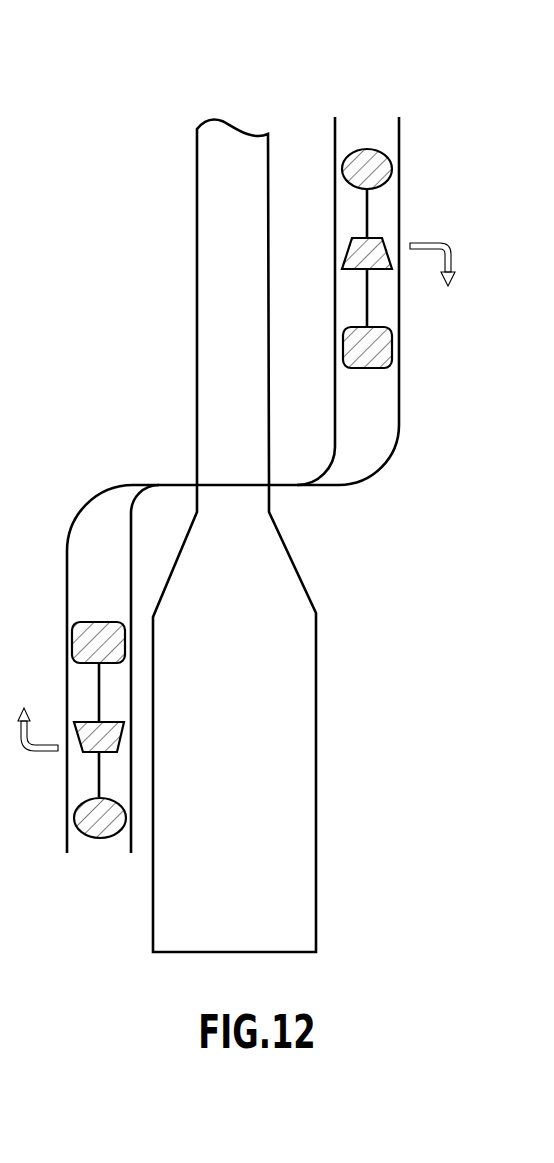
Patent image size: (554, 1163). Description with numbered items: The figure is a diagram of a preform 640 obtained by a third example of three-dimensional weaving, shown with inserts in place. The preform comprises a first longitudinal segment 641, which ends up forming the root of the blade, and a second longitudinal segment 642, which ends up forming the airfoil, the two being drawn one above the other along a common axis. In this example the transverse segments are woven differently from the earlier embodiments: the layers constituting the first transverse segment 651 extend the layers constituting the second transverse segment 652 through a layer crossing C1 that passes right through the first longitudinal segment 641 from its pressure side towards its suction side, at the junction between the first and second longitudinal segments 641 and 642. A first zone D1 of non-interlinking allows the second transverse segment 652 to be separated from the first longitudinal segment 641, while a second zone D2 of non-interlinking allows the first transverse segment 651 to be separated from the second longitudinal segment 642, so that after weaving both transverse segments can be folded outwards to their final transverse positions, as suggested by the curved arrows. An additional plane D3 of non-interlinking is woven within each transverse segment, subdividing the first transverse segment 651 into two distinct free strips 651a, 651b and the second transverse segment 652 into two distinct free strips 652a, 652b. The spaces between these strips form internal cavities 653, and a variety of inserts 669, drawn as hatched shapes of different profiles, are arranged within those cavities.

The preform 640 is at (167, 78).
The first longitudinal segment 641 is at (219, 854).
The second longitudinal segment 642 is at (248, 176).
The first transverse segment 651 is at (374, 267).
The free strip of first transverse segment 651a is at (400, 307).
The free strip of first transverse segment 651b is at (335, 282).
The second transverse segment 652 is at (107, 703).
The free strip of second transverse segment 652a is at (130, 682).
The free strip of second transverse segment 652b is at (67, 642).
The internal cavity 653 is at (383, 213).
The insert 669 is at (380, 170).
The first zone of non-interlinking D1 is at (140, 837).
The second zone of non-interlinking D2 is at (295, 155).
The additional plane of non-interlinking D3 is at (383, 123).
The layer crossing C1 is at (273, 490).